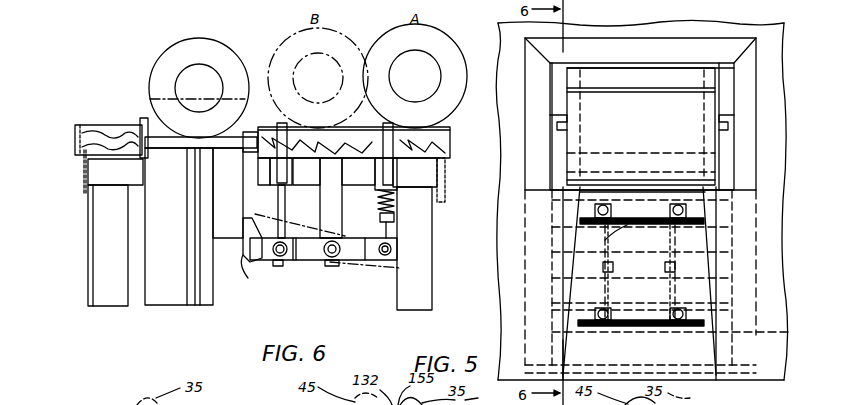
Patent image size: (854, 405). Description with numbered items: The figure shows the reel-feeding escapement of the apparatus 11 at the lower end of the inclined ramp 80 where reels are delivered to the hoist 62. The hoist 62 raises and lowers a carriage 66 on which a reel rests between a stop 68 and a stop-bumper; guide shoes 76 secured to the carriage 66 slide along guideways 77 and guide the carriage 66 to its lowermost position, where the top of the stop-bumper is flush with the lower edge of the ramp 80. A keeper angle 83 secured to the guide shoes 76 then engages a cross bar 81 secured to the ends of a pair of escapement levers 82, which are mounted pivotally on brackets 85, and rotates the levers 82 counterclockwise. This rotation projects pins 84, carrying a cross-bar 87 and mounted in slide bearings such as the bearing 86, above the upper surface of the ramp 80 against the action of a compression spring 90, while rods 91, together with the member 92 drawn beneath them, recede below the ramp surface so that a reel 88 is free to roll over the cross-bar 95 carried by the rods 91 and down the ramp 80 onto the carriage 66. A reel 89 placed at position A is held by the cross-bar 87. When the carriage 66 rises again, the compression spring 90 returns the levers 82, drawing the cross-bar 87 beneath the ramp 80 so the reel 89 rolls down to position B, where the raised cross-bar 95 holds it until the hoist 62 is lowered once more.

In FIG. 6, the machine 11 is at (80, 200).
In FIG. 5, the machine 11 is at (503, 305).
In FIG. 6, the hoist 62 is at (155, 310).
In FIG. 5, the hoist 62 is at (738, 122).
In FIG. 6, the carriage 66 is at (135, 128).
In FIG. 5, the carriage 66 is at (725, 150).
In FIG. 6, the stop 68 is at (141, 118).
In FIG. 5, the stop 68 is at (568, 178).
In FIG. 6, the guide shoes 76 is at (185, 307).
In FIG. 5, the guide shoes 76 is at (548, 80).
In FIG. 5, the guideways 77 is at (550, 100).
In FIG. 6, the inclined ramp 80 is at (450, 130).
In FIG. 5, the inclined ramp 80 is at (716, 380).
In FIG. 6, the cross bar 81 is at (253, 232).
In FIG. 5, the cross bar 81 is at (735, 175).
In FIG. 6, the escapement levers 82 is at (352, 260).
In FIG. 5, the escapement levers 82 is at (525, 287).
In FIG. 6, the keeper angle 83 is at (245, 265).
In FIG. 6, the pins 84 is at (390, 120).
In FIG. 5, the pins 84 is at (598, 314).
In FIG. 6, the brackets 85 is at (342, 218).
In FIG. 5, the brackets 85 is at (580, 268).
In FIG. 6, the bearing 86 is at (393, 170).
In FIG. 6, the cross-bar 87 is at (388, 123).
In FIG. 5, the cross-bar 87 is at (690, 320).
In FIG. 6, the reel 88 is at (300, 36).
In FIG. 6, the reel 89 is at (372, 52).
In FIG. 6, the compression spring 90 is at (393, 206).
In FIG. 6, the rods 91 is at (283, 123).
In FIG. 5, the rods 91 is at (598, 210).
In FIG. 6, the rod 92 is at (285, 187).
In FIG. 6, the cross-bar 95 is at (290, 130).
In FIG. 5, the cross-bar 95 is at (605, 240).